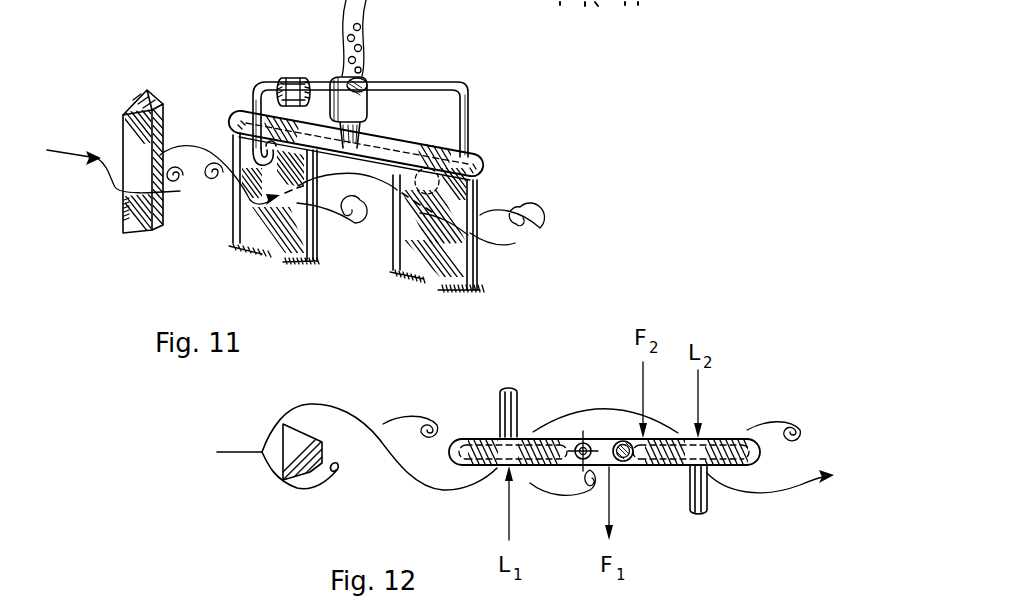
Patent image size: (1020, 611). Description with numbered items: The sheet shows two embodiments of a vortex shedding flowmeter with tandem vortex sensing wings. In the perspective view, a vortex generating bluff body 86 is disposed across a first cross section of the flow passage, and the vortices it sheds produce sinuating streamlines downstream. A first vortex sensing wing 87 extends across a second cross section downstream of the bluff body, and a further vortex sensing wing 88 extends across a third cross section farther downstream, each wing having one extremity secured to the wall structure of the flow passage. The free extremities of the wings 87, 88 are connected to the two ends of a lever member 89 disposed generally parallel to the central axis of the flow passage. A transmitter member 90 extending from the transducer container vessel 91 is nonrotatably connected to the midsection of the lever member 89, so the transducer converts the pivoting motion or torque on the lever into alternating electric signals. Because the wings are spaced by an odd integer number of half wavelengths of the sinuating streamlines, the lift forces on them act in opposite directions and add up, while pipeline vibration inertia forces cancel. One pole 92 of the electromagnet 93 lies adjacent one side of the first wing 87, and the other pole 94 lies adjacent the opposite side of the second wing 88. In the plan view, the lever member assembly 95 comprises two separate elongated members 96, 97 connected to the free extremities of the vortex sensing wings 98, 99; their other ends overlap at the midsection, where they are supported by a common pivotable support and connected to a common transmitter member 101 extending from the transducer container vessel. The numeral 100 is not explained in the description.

In FIG. 11, the vortex generating bluff body 86 is at (138, 92).
In FIG. 11, the first vortex sensing wing 87 is at (263, 230).
In FIG. 11, the vortex sensing wing 88 is at (425, 260).
In FIG. 11, the lever member 89 is at (400, 130).
In FIG. 11, the transmitter member 90 is at (393, 142).
In FIG. 11, the transducer container vessel 91 is at (353, 102).
In FIG. 11, the pole of the electromagnet 92 is at (232, 145).
In FIG. 11, the electromagnet 93 is at (288, 78).
In FIG. 11, the pole of the electromagnet 94 is at (460, 190).
In FIG. 12, the lever member assembly 95 is at (600, 439).
In FIG. 12, the elongated member 96 is at (550, 437).
In FIG. 12, the elongated member 97 is at (655, 440).
In FIG. 12, the vortex sensing wing 98 is at (523, 466).
In FIG. 12, the vortex sensing wing 99 is at (690, 455).
In FIG. 12, the pivot axis 100 is at (571, 439).
In FIG. 12, the common transmitter member 101 is at (623, 440).